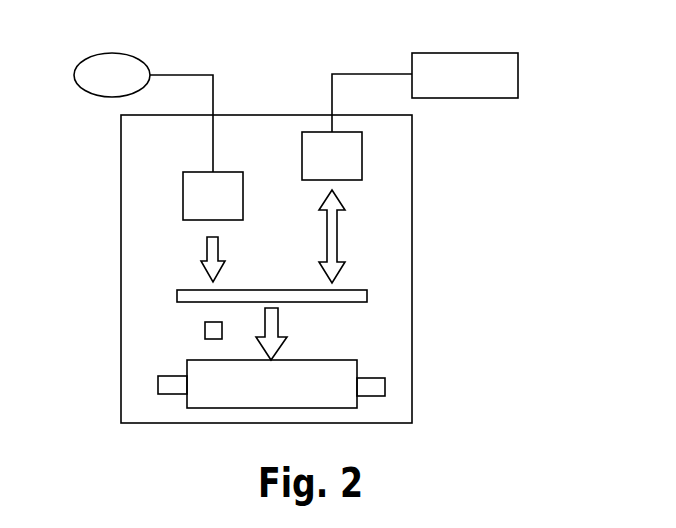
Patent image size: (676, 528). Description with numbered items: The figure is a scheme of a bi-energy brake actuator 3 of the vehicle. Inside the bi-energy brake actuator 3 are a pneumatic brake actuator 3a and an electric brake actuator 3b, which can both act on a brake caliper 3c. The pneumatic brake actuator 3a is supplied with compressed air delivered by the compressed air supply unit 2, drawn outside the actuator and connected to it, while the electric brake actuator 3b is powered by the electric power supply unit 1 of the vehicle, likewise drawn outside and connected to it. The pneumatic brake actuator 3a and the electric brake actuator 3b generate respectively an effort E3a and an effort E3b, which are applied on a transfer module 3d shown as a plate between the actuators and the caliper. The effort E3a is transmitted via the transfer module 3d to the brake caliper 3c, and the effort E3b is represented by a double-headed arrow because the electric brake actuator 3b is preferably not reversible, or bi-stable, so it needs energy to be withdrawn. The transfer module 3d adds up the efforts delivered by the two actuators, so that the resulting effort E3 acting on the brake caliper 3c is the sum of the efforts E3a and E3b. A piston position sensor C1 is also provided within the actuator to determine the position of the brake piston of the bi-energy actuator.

The electric power supply unit 1 is at (458, 83).
The compressed air supply unit 2 is at (104, 86).
The bi-energy brake actuator 3 is at (428, 414).
The pneumatic brake actuator 3a is at (230, 205).
The electric brake actuator 3b is at (348, 166).
The brake caliper 3c is at (286, 395).
The transfer module 3d is at (380, 295).
The piston position sensor C1 is at (205, 331).
The sum of efforts E3 is at (286, 350).
The effort of pneumatic brake actuator E3a is at (207, 258).
The effort of electric brake actuator E3b is at (333, 238).